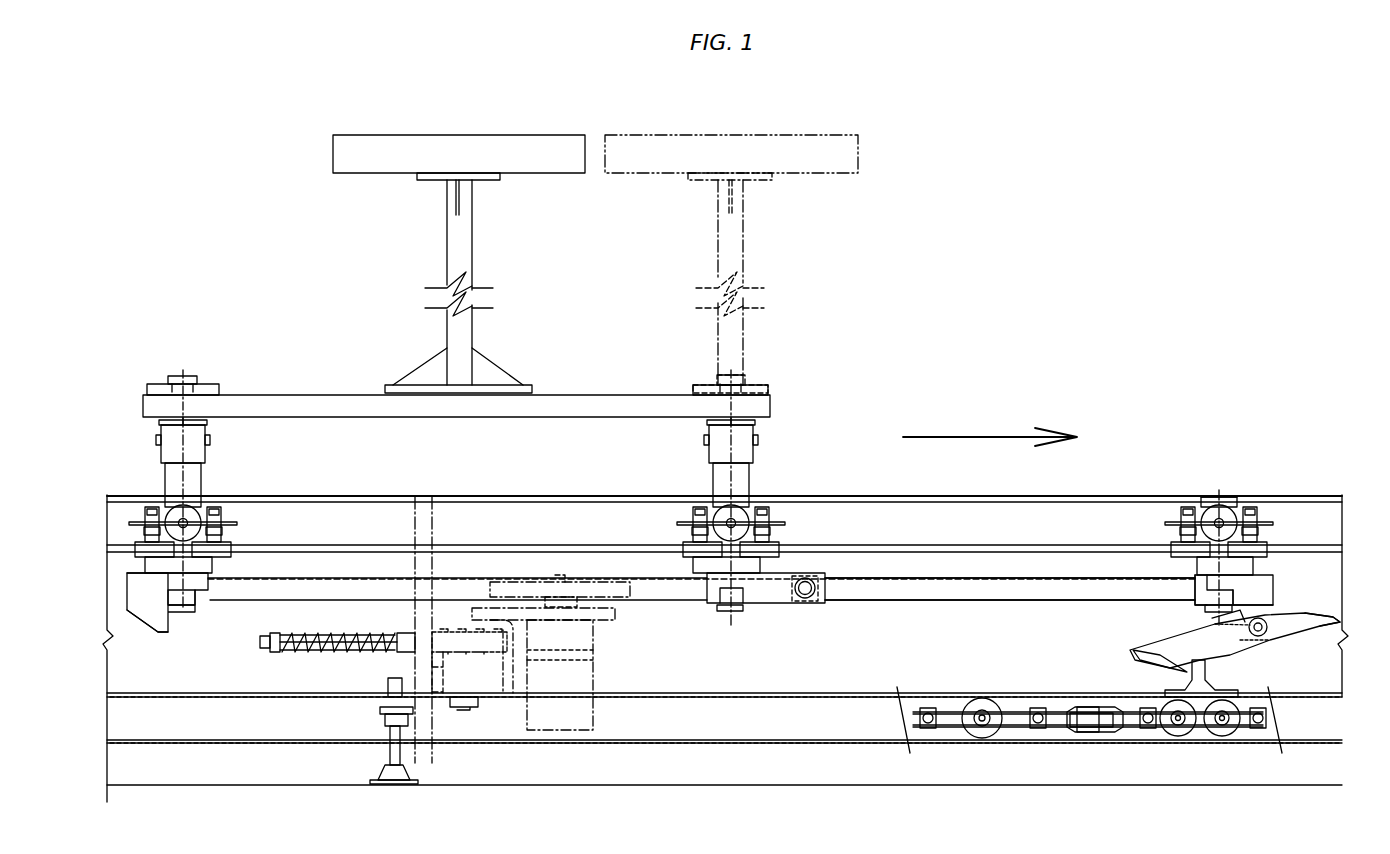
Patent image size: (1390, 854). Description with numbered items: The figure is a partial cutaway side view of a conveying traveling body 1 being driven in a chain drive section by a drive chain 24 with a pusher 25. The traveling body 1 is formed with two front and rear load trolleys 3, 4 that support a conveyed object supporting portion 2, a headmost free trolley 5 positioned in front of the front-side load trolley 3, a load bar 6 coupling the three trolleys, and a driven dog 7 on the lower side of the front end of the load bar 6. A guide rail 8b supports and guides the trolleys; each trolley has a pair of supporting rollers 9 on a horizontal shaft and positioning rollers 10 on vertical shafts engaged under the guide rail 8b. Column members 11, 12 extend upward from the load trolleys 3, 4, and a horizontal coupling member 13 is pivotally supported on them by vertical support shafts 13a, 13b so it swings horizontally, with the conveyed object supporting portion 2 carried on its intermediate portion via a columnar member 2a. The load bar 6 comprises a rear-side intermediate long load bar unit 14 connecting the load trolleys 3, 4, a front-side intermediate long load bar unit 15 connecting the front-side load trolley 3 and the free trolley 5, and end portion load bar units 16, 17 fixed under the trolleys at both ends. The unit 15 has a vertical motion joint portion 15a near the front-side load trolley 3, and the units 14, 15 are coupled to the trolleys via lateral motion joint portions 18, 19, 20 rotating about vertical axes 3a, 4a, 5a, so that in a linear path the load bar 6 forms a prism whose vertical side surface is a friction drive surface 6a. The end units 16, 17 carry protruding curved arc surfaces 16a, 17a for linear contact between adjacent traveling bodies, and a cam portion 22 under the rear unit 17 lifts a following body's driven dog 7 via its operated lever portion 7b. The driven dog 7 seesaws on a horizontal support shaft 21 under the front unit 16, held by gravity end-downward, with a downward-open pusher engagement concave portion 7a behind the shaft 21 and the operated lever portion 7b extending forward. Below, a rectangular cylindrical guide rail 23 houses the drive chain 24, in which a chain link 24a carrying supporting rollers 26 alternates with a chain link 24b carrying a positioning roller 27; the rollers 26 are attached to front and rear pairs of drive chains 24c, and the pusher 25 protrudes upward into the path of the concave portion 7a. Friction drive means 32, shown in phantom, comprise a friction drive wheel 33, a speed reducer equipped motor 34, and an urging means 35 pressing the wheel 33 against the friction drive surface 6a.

The conveying traveling body 1 is at (328, 382).
The conveyed object supporting portion 2 is at (530, 150).
The columnar member 2a is at (456, 257).
The front-side load trolley 3 is at (777, 512).
The vertical axis 3a is at (700, 570).
The rear-side load trolley 4 is at (233, 515).
The vertical axis 4a is at (210, 565).
The headmost free trolley 5 is at (1265, 512).
The vertical axis 5a is at (1230, 512).
The load bar 6 is at (960, 578).
The friction drive surface 6a is at (1005, 590).
The driven dog 7 is at (1133, 648).
The pusher engagement concave portion 7a is at (1180, 660).
The operated lever portion 7b is at (1305, 627).
The guide rail 8b is at (1100, 496).
The supporting roller 9 is at (177, 512).
The positioning roller 10 is at (140, 547).
The column member 11 is at (740, 480).
The column member 12 is at (193, 487).
The horizontal coupling member 13 is at (570, 420).
The vertical support shaft 13a is at (752, 395).
The vertical support shaft 13b is at (170, 404).
The rear-side intermediate long load bar unit 14 is at (366, 585).
The front-side intermediate long load bar unit 15 is at (928, 600).
The vertical motion joint portion 15a is at (803, 600).
The end portion load bar unit 16 is at (1255, 585).
The protruding curved arc surface 16a is at (1273, 595).
The end portion load bar unit 17 is at (145, 597).
The protruding curved arc surface 17a is at (127, 586).
The lateral motion joint portion 18 is at (744, 596).
The lateral motion joint portion 19 is at (200, 597).
The lateral motion joint portion 20 is at (1197, 585).
The horizontal support shaft 21 is at (1259, 637).
The cam portion 22 is at (143, 625).
The rectangular cylindrical guide rail 23 is at (697, 728).
The drive chain 24 is at (945, 745).
The chain link 24a is at (1015, 745).
The chain link 24b is at (1078, 705).
The drive chain 24c is at (1258, 740).
The pusher 25 is at (1195, 668).
The supporting roller 26 is at (982, 700).
The positioning roller 27 is at (1088, 735).
The friction drive means 32 is at (523, 580).
The friction drive wheel 33 is at (545, 580).
The speed reducer equipped motor 34 is at (580, 675).
The urging means 35 is at (332, 653).